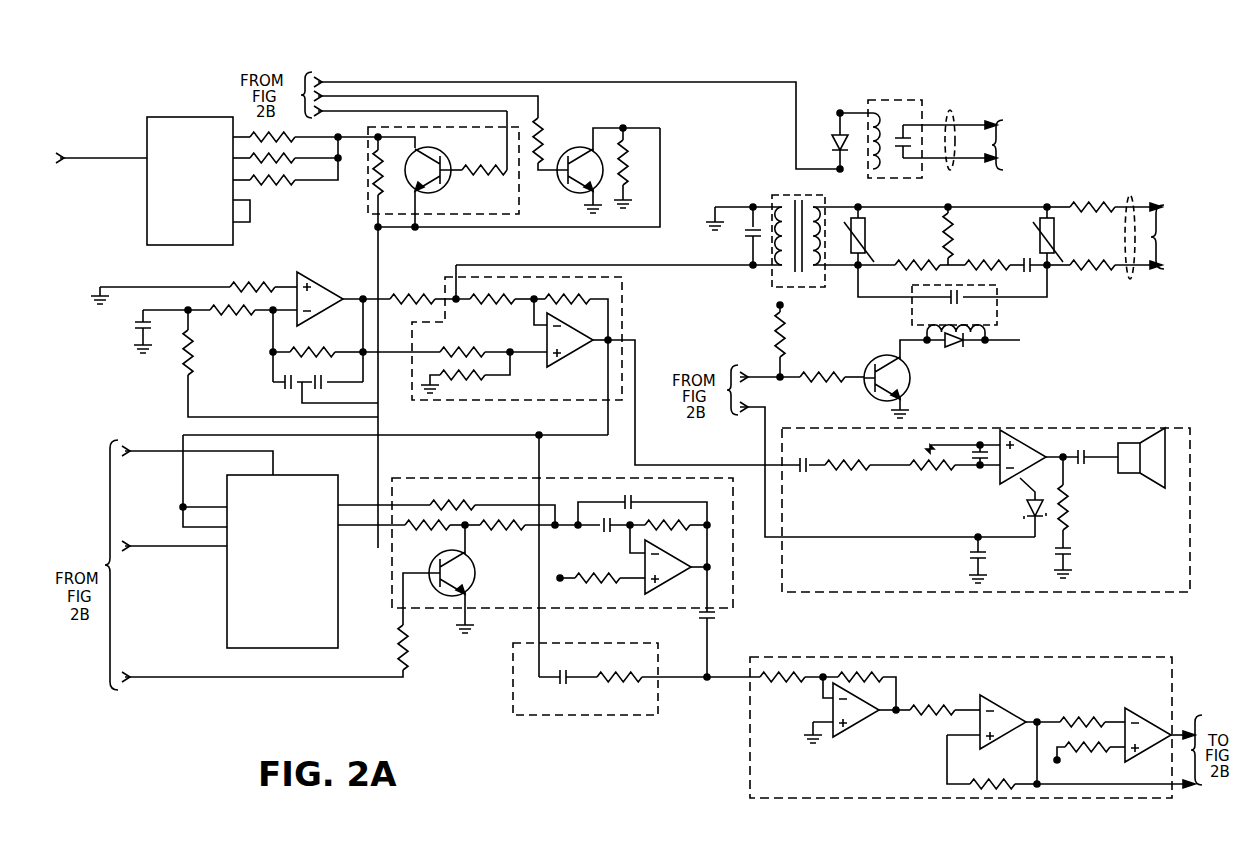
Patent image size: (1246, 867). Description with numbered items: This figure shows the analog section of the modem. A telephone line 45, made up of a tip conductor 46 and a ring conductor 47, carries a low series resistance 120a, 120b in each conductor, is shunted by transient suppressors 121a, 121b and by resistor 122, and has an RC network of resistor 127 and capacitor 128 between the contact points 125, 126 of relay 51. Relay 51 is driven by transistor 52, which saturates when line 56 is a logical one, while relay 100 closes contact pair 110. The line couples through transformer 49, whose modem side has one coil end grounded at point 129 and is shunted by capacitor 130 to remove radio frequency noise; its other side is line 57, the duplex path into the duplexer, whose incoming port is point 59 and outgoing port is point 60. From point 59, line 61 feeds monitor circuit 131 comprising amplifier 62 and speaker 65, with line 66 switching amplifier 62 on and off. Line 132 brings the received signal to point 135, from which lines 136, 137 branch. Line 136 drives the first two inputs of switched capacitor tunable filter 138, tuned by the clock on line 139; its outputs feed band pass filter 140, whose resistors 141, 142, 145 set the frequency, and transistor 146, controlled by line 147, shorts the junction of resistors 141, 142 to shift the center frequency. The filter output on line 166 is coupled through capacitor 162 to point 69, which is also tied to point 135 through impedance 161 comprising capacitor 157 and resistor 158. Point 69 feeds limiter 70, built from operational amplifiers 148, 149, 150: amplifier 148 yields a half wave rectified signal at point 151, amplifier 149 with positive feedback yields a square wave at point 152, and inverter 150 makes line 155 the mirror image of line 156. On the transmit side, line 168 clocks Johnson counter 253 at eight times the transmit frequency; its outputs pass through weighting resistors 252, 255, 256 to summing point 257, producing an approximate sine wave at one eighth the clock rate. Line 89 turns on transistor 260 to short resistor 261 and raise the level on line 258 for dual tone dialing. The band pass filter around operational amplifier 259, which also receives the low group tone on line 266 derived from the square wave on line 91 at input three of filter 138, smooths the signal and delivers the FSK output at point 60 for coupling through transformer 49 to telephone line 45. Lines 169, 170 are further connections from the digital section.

The line 168 is at (125, 158).
The Johnson counter 253 is at (163, 117).
The weighting resistor 252 is at (246, 131).
The weighting resistor 255 is at (285, 165).
The weighting resistor 256 is at (255, 185).
The summing point 257 is at (338, 136).
The resistor 261 is at (373, 190).
The transistor 260 is at (448, 174).
The line 258 is at (378, 253).
The line from FIG 2B 170 is at (693, 84).
The line from FIG 2B 169 is at (536, 90).
The line 89 is at (480, 104).
The relay 100 is at (898, 100).
The contact pair 110 is at (952, 111).
The transformer 49 is at (783, 195).
The ground point 129 is at (753, 207).
The capacitor 130 is at (745, 238).
The point 125 is at (857, 267).
The transient suppressor 121a is at (870, 220).
The resistor 122 is at (940, 257).
The transient suppressor 121b is at (1035, 236).
The resistor 127 is at (1005, 262).
The capacitor 128 is at (1025, 268).
The point 126 is at (1047, 267).
The low resistance 120a is at (1088, 202).
The low resistance 120b is at (1088, 267).
The telephone line 45 is at (1134, 281).
The tip conductor 46 is at (1150, 207).
The ring conductor 47 is at (1150, 270).
The relay 51 is at (912, 313).
The relay driver transistor 52 is at (873, 357).
The line 56 is at (762, 377).
The line 66 is at (766, 417).
The operational amplifier 259 is at (306, 273).
The line 266 is at (188, 392).
The outgoing port 60 is at (363, 297).
The line 57 is at (456, 265).
The incoming port point 59 is at (610, 340).
The line 61 is at (638, 438).
The line 132 is at (568, 440).
The monitor circuit 131 is at (1090, 428).
The amplifier 62 is at (1022, 435).
The speaker 65 is at (1148, 476).
The switched capacitor tunable filter 138 is at (227, 608).
The line 139 is at (170, 451).
The line 136 is at (459, 434).
The line 91 is at (180, 547).
The line 147 is at (193, 677).
The point 135 is at (537, 434).
The line 137 is at (539, 630).
The filter 140 is at (735, 567).
The resistor 145 is at (468, 500).
The resistor 142 is at (440, 531).
The resistor 141 is at (518, 529).
The transistor 146 is at (475, 568).
The line 166 is at (705, 605).
The capacitor 162 is at (728, 621).
The impedance 161 is at (587, 715).
The capacitor 157 is at (564, 686).
The resistor 158 is at (628, 676).
The point 69 is at (705, 681).
The limiter 70 is at (750, 767).
The operational amplifier 148 is at (848, 732).
The point 151 is at (898, 712).
The operational amplifier 149 is at (1004, 699).
The point 152 is at (1037, 720).
The inverter 150 is at (1112, 724).
The line 155 is at (1187, 727).
The line 156 is at (1183, 781).